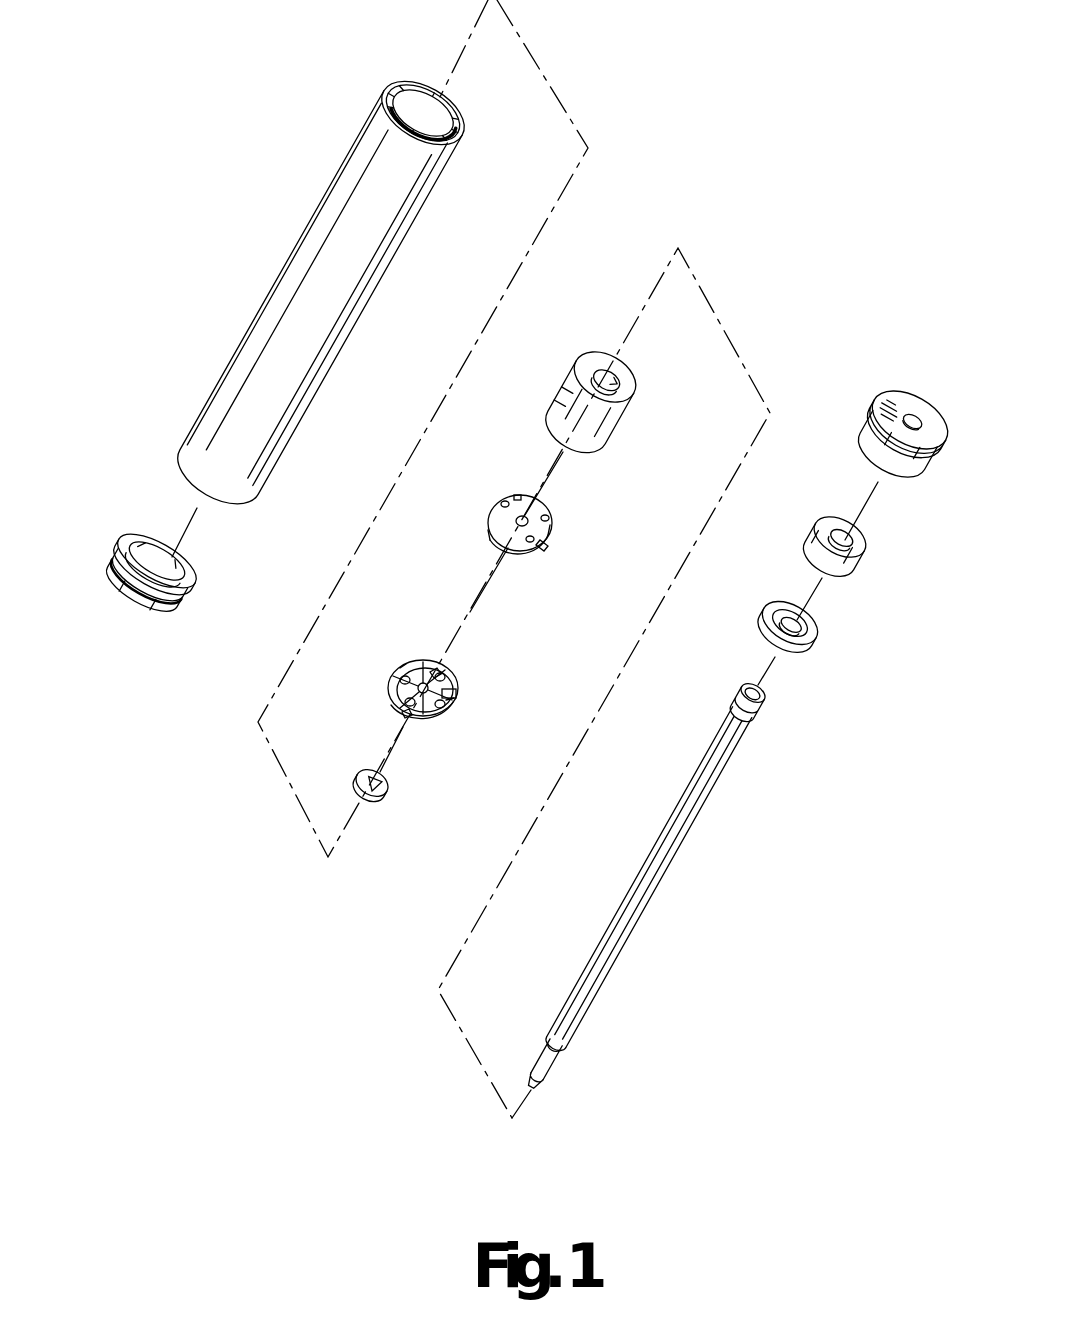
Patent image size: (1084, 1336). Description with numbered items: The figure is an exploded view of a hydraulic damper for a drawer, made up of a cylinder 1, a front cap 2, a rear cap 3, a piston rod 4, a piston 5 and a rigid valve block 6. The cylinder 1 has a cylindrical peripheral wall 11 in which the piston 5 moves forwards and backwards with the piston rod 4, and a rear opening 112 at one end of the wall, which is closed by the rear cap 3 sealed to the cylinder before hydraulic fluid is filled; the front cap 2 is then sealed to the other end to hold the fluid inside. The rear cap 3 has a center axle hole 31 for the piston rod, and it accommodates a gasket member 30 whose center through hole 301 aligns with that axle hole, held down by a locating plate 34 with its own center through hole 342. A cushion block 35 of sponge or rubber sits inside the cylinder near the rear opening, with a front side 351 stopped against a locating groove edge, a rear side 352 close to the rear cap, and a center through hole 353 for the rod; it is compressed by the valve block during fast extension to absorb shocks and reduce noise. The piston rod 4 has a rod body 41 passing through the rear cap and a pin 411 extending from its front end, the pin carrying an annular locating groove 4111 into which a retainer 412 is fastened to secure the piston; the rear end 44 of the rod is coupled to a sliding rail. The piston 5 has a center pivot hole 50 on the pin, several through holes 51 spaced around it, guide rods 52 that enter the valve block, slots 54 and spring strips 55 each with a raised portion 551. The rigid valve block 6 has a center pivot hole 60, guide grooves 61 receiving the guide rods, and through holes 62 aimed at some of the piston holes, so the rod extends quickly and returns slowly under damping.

The cylinder 1 is at (252, 282).
The cylindrical peripheral wall 11 is at (414, 108).
The rear opening 112 is at (452, 112).
The front cap 2 is at (128, 524).
The rear cap 3 is at (862, 410).
The center axle hole 31 is at (912, 415).
The gasket member 30 is at (865, 563).
The center through hole 301 is at (855, 540).
The locating plate 34 is at (815, 650).
The center through hole 342 is at (805, 627).
The cushion block 35 is at (556, 392).
The front side 351 is at (548, 420).
The rear side 352 is at (603, 352).
The center through hole 353 is at (614, 381).
The piston rod 4 is at (580, 957).
The rod body 41 is at (652, 852).
The pin 411 is at (548, 1050).
The annular locating groove 4111 is at (538, 1085).
The rear end 44 is at (740, 705).
The retainer 412 is at (375, 798).
The piston 5 is at (372, 673).
The center pivot hole 50 is at (430, 730).
The through holes 51 is at (418, 665).
The guide rods 52 is at (430, 670).
The slots 54 is at (460, 695).
The spring strips 55 is at (455, 688).
The raised portion 551 is at (400, 668).
The rigid valve block 6 is at (487, 545).
The center pivot hole 60 is at (490, 522).
The guide grooves 61 is at (505, 503).
The through holes 62 is at (517, 497).